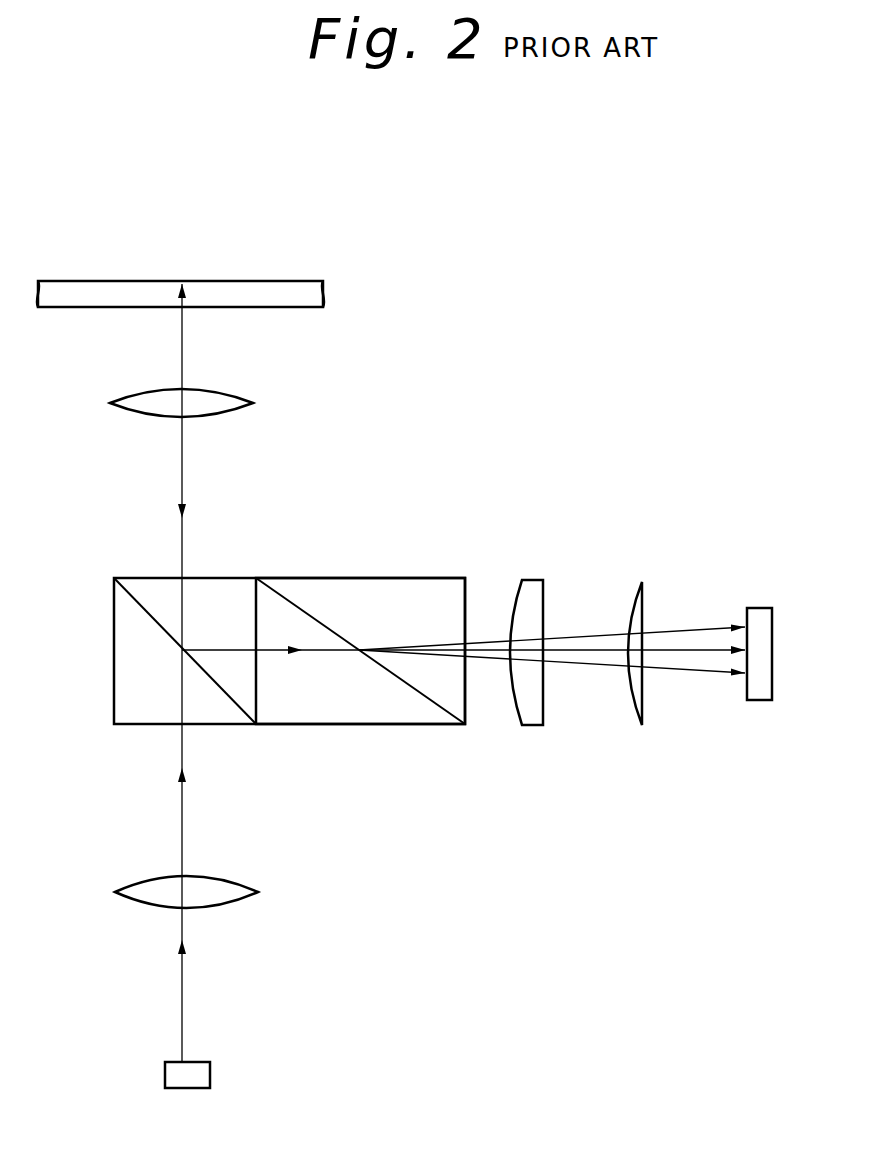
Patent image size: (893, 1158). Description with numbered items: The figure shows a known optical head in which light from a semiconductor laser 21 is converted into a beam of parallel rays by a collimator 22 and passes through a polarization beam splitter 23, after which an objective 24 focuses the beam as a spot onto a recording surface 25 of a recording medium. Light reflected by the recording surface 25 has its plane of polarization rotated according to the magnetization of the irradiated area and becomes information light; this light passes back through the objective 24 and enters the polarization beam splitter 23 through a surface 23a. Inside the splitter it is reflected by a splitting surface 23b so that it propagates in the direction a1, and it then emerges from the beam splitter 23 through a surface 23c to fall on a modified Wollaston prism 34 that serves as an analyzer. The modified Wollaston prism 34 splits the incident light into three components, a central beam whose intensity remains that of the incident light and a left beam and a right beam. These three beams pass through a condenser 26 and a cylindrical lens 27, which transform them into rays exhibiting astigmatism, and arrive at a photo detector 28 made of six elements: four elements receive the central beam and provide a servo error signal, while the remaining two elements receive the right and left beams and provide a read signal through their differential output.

The semiconductor laser 21 is at (166, 1074).
The collimator 22 is at (140, 888).
The polarization beam splitter 23 is at (106, 653).
The surface 23a is at (212, 577).
The splitting surface 23b is at (143, 600).
The surface 23c is at (257, 609).
The objective 24 is at (130, 401).
The recording surface 25 is at (150, 281).
The condenser 26 is at (530, 586).
The cylindrical lens 27 is at (629, 596).
The photo detector 28 is at (756, 608).
The modified Wollaston prism 34 is at (378, 568).
The direction of propagation a1 is at (461, 673).